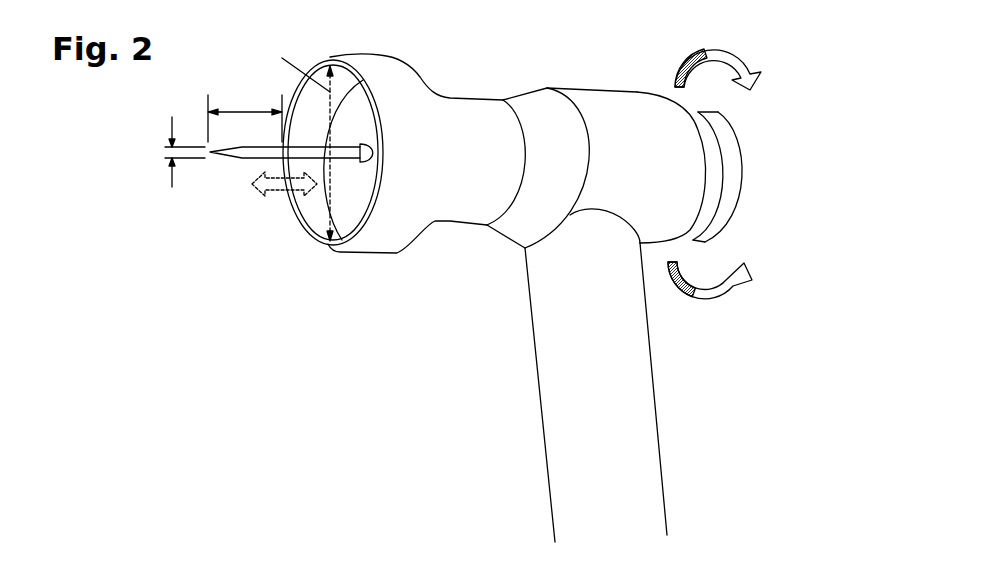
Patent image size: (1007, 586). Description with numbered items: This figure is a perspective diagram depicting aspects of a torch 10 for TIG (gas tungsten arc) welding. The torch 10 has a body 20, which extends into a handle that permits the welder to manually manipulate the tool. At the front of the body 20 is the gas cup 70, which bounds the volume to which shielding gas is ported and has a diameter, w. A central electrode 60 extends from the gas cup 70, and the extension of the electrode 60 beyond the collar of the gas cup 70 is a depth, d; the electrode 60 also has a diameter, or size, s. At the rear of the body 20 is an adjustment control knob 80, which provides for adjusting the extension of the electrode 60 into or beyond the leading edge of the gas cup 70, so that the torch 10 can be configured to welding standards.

The gas tungsten arc welding torch 10 is at (491, 273).
The body 20 is at (494, 273).
The electrode 60 is at (240, 158).
The gas cup 70 is at (348, 245).
The adjustment control knob 80 is at (735, 157).